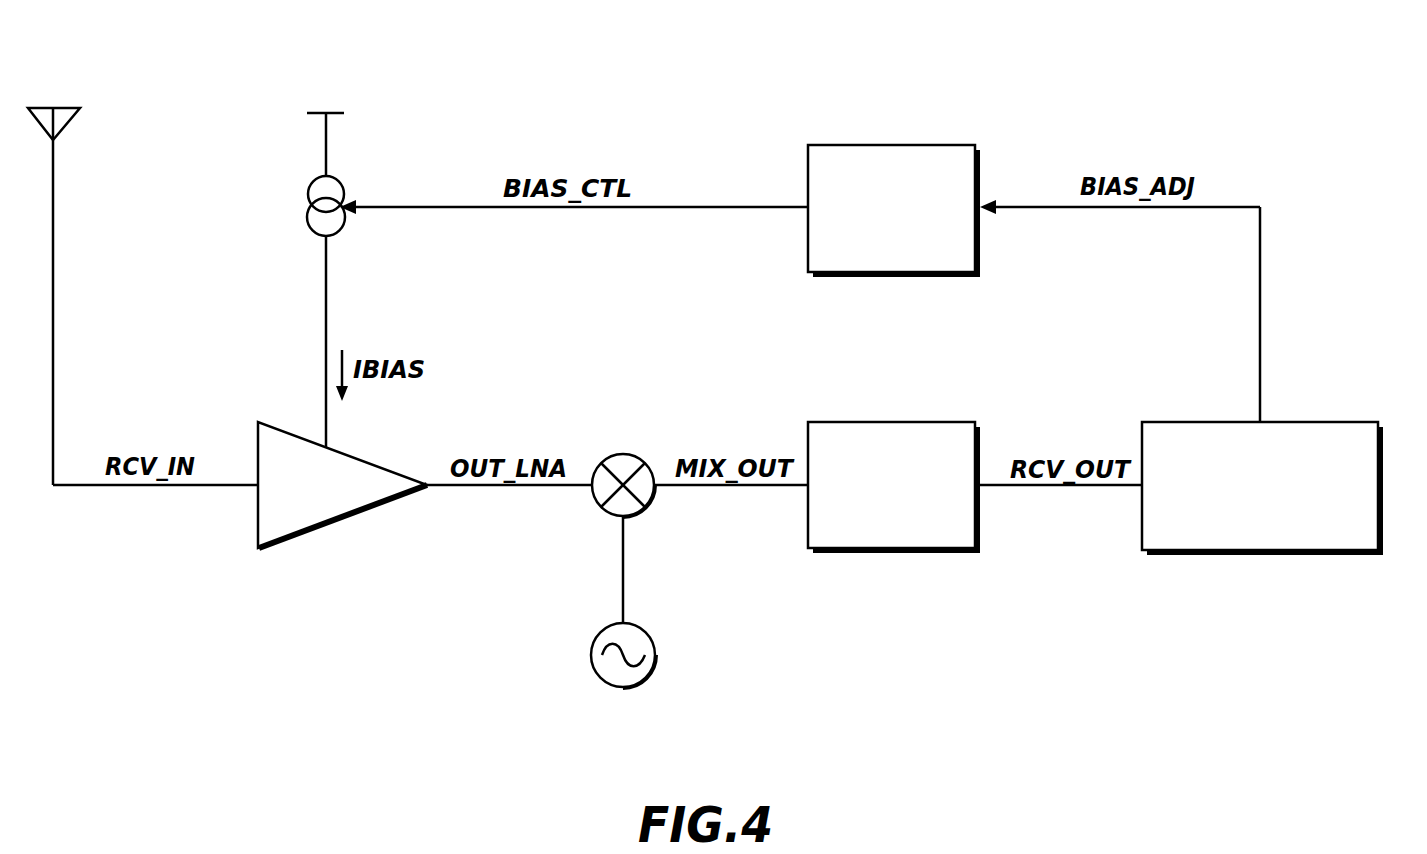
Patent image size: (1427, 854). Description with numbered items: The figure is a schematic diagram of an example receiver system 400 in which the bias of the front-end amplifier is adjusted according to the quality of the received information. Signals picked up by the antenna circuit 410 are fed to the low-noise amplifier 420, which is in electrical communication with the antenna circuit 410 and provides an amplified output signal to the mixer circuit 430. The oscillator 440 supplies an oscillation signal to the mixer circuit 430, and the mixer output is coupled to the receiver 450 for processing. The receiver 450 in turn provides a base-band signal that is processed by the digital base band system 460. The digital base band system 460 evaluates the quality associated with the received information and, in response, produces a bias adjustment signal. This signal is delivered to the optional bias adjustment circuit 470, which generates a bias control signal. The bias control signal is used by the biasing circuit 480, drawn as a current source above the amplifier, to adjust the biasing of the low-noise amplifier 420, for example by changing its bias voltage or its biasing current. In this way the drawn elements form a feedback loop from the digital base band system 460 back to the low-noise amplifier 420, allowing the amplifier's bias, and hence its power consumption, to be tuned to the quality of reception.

The receiver system 400 is at (1178, 66).
The antenna circuit 410 is at (67, 122).
The low-noise amplifier 420 is at (355, 517).
The mixer circuit 430 is at (643, 517).
The oscillator 440 is at (592, 665).
The receiver 450 is at (913, 422).
The digital base-band system 460 is at (1308, 422).
The optional bias adjustment circuit 470 is at (935, 145).
The biasing circuit 480 is at (337, 185).